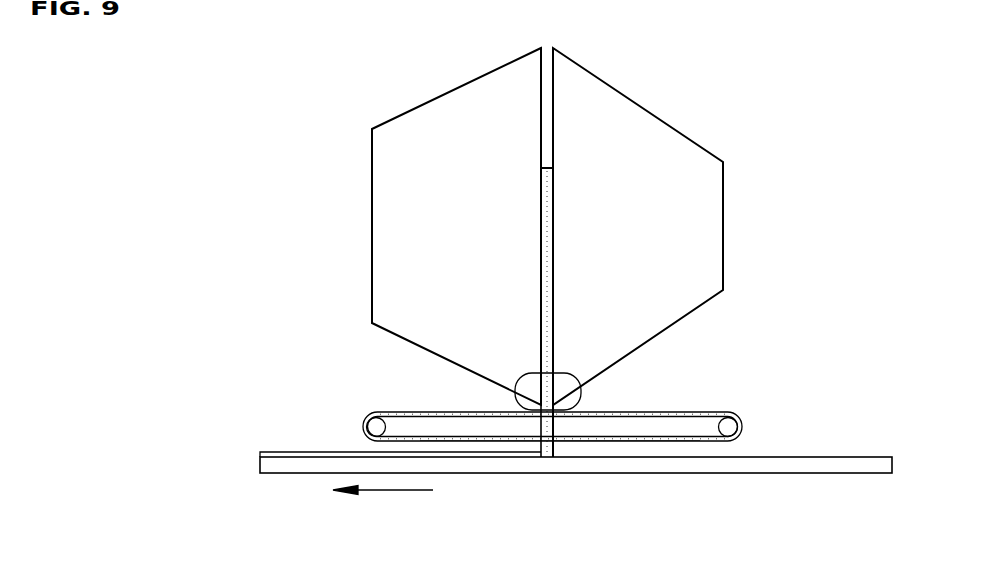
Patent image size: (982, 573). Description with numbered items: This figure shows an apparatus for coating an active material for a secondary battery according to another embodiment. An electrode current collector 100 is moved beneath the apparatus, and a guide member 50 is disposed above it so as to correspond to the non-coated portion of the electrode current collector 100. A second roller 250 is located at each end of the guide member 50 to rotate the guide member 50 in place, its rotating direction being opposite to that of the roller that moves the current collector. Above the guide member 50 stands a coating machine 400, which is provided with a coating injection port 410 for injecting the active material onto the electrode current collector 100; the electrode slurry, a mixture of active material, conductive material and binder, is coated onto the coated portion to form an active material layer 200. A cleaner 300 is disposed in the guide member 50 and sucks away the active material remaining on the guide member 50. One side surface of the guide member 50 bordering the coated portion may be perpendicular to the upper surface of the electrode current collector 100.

The guide member 50 is at (657, 439).
The electrode current collector 100 is at (790, 469).
The active material layer 200 is at (487, 456).
The second roller 250 is at (734, 425).
The cleaner 300 is at (557, 439).
The coating machine 400 is at (667, 134).
The coating injection port 410 is at (579, 393).